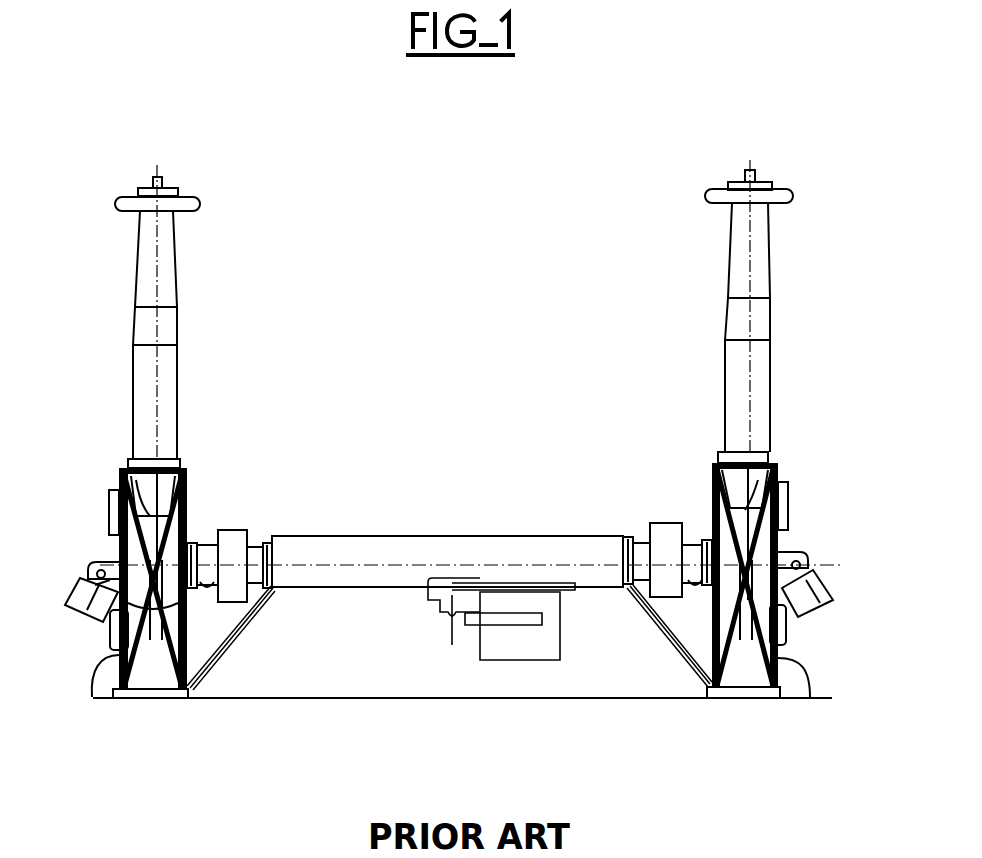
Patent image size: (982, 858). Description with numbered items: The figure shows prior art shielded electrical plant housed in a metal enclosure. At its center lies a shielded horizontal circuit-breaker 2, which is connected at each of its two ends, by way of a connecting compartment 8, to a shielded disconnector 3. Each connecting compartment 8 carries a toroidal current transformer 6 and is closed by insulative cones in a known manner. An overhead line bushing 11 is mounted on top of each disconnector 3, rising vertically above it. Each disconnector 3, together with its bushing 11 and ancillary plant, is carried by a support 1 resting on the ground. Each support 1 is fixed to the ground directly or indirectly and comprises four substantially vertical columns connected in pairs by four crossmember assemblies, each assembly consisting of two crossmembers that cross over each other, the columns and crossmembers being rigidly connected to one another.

The support 1 is at (120, 545).
The shielded horizontal circuit-breaker 2 is at (413, 560).
The shielded disconnector 3 is at (123, 468).
The toroidal current transformer 6 is at (667, 537).
The connecting compartment 8 is at (252, 550).
The overhead line bushing 11 is at (165, 328).